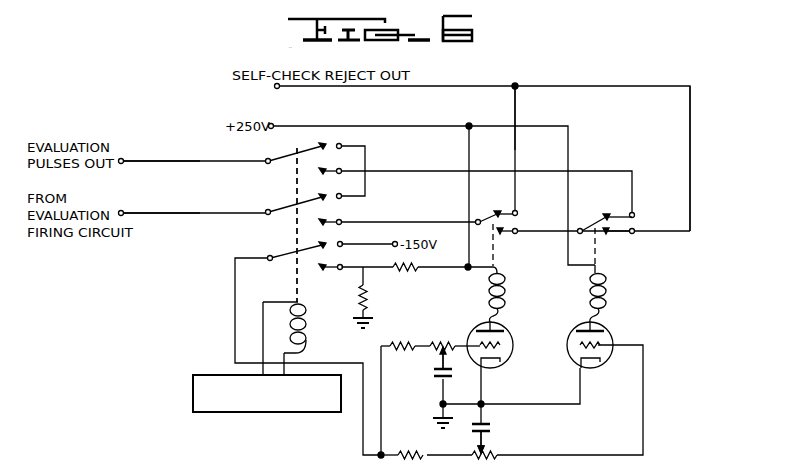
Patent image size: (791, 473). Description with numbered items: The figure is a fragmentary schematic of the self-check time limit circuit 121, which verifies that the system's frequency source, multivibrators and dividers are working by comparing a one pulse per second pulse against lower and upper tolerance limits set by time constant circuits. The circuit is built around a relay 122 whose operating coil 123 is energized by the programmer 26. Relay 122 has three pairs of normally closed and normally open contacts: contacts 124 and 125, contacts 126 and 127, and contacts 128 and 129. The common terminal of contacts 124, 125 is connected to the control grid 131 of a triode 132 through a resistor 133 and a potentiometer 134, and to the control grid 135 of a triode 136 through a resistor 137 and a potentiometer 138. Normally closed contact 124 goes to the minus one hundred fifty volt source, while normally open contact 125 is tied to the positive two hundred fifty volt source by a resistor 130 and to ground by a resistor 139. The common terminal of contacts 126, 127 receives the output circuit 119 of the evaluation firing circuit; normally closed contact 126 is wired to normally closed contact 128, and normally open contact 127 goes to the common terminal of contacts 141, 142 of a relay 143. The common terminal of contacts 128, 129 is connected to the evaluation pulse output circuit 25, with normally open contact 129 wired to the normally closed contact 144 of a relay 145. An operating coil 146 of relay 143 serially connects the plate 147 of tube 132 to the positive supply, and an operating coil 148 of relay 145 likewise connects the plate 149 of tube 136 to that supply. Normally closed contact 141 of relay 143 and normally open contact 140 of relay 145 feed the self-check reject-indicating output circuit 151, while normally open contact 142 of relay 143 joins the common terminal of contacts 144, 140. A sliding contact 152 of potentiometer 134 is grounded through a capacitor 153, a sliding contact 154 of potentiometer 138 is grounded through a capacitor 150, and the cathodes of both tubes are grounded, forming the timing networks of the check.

The evaluation pulse output circuit 25 is at (149, 161).
The output circuit of the evaluation firing circuit 119 is at (150, 214).
The self-check time limit circuit 121 is at (691, 124).
The relay 122 is at (223, 286).
The operating coil 123 is at (304, 328).
The normally closed contact 124 is at (292, 251).
The normally open contact 125 is at (313, 266).
The normally closed contact 126 is at (296, 205).
The normally open contact 127 is at (312, 221).
The normally closed contact 128 is at (296, 156).
The normally open contact 129 is at (312, 169).
The resistor 130 is at (406, 267).
The control grid 131 is at (506, 337).
The triode 132 is at (499, 322).
The resistor 133 is at (399, 342).
The potentiometer 134 is at (446, 342).
The control grid 135 is at (595, 342).
The triode 136 is at (600, 322).
The resistor 137 is at (413, 451).
The potentiometer 138 is at (497, 459).
The resistor 139 is at (368, 295).
The normally open contact 140 is at (610, 227).
The normally closed contact 141 is at (492, 208).
The normally open contact 142 is at (505, 224).
The relay 143 is at (543, 256).
The normally closed contact 144 is at (591, 210).
The relay 145 is at (641, 256).
The operating coil 146 is at (505, 281).
The plate 147 is at (506, 333).
The operating coil 148 is at (606, 281).
The plate 149 is at (605, 333).
The capacitor 150 is at (489, 424).
The self-check reject-indicating output circuit 151 is at (512, 86).
The sliding contact 152 is at (440, 356).
The capacitor 153 is at (446, 377).
The sliding contact 154 is at (485, 449).
The programmer 26 is at (192, 402).